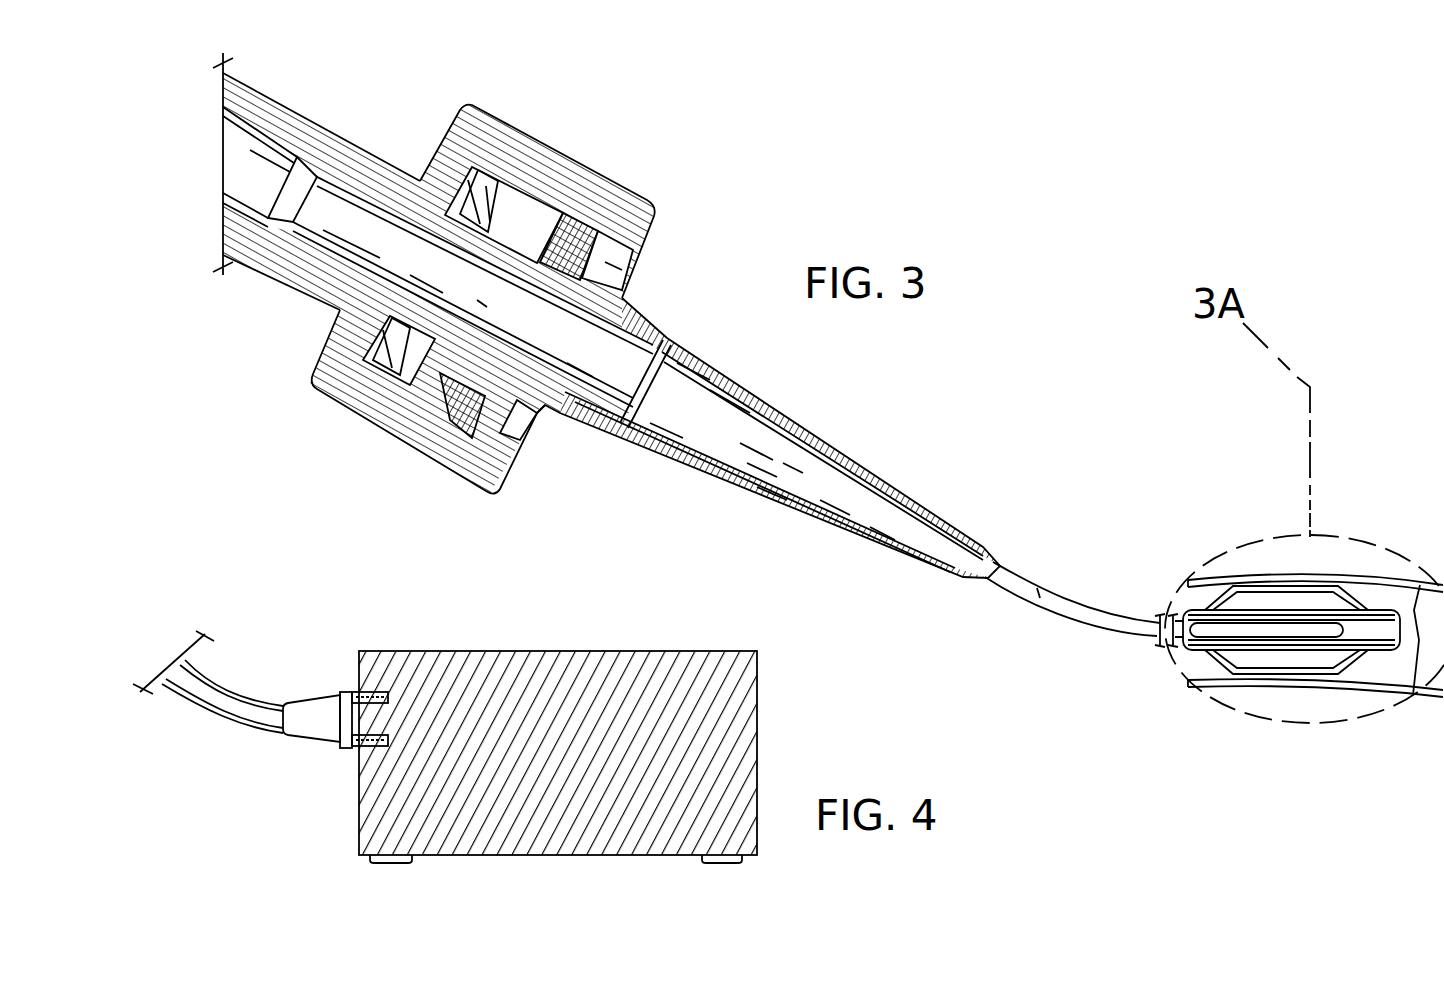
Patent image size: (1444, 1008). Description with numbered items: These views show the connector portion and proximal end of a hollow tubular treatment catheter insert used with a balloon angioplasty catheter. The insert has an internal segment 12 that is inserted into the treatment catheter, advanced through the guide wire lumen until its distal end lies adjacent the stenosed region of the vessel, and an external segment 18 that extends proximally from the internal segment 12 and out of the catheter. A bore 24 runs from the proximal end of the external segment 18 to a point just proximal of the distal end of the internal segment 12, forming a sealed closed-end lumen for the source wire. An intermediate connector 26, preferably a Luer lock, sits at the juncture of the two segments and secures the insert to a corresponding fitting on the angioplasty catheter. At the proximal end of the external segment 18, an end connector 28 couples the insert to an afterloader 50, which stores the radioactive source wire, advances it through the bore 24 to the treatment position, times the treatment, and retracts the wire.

In FIG. 3, the internal segment 12 is at (1033, 592).
In FIG. 3, the external segment 18 is at (276, 98).
In FIG. 4, the external segment 18 is at (203, 718).
In FIG. 3, the bore 24 is at (238, 168).
In FIG. 3, the intermediate connector 26 is at (503, 124).
In FIG. 4, the end connector 28 is at (312, 722).
In FIG. 4, the afterloader 50 is at (765, 737).